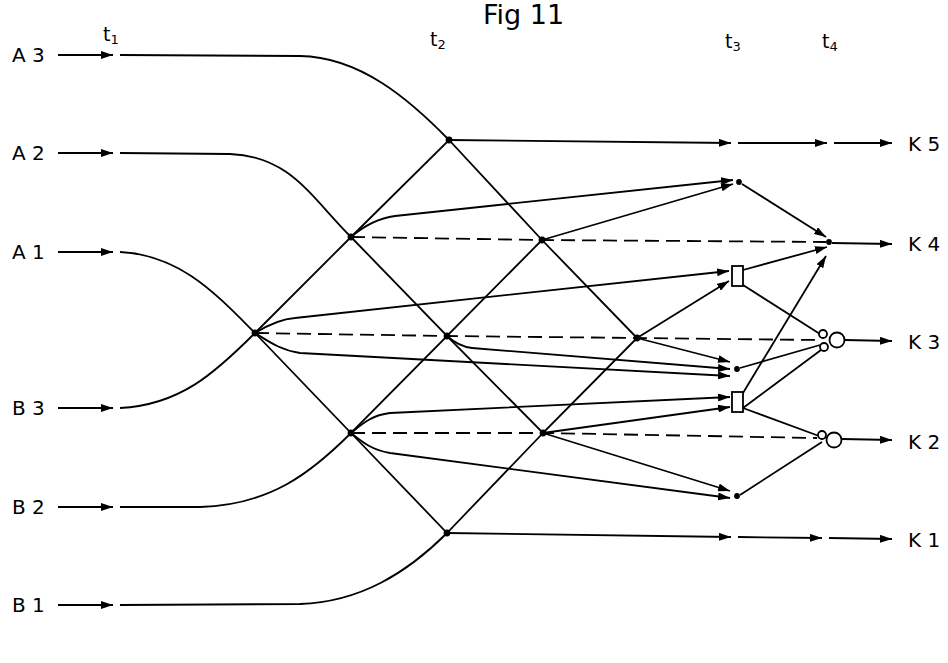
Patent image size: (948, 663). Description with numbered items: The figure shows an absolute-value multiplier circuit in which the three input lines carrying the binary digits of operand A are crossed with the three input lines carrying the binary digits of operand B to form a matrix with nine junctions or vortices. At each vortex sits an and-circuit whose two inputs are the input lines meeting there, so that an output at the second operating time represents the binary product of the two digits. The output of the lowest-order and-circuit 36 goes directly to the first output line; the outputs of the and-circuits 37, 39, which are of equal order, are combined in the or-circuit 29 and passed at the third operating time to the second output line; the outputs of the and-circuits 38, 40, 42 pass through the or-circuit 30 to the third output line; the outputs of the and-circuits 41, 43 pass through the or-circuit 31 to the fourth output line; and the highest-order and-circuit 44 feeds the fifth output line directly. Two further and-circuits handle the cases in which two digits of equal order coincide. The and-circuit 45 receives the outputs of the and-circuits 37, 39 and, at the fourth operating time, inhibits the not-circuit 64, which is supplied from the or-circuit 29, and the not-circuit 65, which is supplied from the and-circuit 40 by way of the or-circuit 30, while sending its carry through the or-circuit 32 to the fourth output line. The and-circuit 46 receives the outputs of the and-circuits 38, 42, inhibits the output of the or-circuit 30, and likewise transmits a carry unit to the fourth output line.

The and-circuit 36 is at (451, 543).
The and-circuit 37 is at (349, 446).
The and-circuit 38 is at (251, 347).
The and-circuit 39 is at (546, 445).
The and-circuit 40 is at (446, 348).
The and-circuit 41 is at (348, 250).
The and-circuit 42 is at (643, 349).
The and-circuit 43 is at (541, 252).
The and-circuit 44 is at (446, 154).
The and-circuit 45 is at (733, 410).
The and-circuit 46 is at (734, 285).
The or-circuit 29 is at (739, 504).
The or-circuit 30 is at (739, 360).
The or-circuit 31 is at (734, 193).
The or-circuit 32 is at (840, 251).
The not-circuit 64 is at (831, 447).
The not-circuit 65 is at (834, 348).